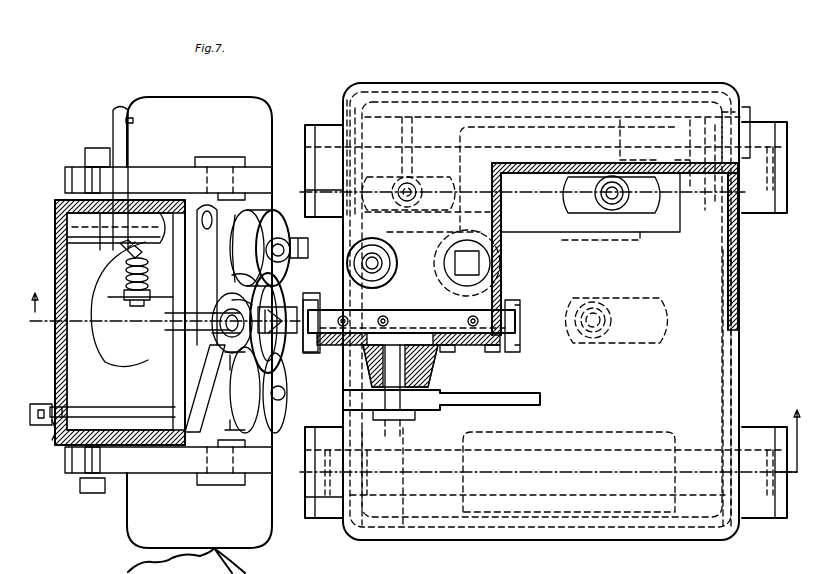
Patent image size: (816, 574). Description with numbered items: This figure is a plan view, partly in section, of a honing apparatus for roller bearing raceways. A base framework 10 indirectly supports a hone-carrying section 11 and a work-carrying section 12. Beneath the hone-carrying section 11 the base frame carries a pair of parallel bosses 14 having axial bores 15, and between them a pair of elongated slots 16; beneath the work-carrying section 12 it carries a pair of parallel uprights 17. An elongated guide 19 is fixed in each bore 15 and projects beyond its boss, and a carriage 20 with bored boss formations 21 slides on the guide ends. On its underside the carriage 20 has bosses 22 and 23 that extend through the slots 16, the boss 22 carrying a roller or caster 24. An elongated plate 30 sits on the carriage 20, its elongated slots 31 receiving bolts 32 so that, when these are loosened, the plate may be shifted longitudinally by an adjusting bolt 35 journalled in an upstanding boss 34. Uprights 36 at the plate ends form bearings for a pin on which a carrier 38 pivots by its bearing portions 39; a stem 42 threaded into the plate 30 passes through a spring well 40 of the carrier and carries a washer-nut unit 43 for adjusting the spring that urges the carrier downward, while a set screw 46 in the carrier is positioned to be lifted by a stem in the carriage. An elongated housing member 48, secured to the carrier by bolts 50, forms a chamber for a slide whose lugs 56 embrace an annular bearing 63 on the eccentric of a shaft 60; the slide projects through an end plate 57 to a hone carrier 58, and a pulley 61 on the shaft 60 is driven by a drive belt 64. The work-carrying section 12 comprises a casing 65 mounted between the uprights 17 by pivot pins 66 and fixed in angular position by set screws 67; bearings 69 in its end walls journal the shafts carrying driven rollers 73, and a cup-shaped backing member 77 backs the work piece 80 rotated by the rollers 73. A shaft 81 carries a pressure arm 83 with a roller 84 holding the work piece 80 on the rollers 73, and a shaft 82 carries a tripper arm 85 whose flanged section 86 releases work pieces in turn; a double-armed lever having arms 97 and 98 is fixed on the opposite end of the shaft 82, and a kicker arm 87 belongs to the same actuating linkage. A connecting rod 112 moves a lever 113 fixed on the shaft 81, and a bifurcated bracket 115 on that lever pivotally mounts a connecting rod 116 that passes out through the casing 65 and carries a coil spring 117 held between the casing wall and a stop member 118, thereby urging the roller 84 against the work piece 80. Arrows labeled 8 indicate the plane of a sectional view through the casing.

The section line 8- 8 is at (414, 377).
The base framework 10 is at (722, 355).
The hone-carrying section 11 is at (536, 330).
The work-carrying section 12 is at (282, 440).
The bosses 14 is at (530, 120).
The axial bores 15 is at (560, 120).
The elongated slots 16 is at (520, 266).
The uprights 17 is at (256, 165).
The elongated guide 19 is at (585, 120).
The carriage 20 is at (494, 541).
The boss formations 21 is at (318, 130).
The boss 22 is at (605, 330).
The boss 23 is at (500, 244).
The roller or caster 24 is at (600, 320).
The elongated plate 30 is at (645, 228).
The elongated slots 31 is at (425, 182).
The bolts 32 is at (412, 185).
The upstanding boss 34 is at (728, 110).
The adjusting bolt 35 is at (705, 118).
The upright 36 is at (412, 125).
The carrier 38 is at (738, 303).
The bearing portions 39 is at (680, 118).
The spring well 40 is at (390, 240).
The stem 42 is at (390, 252).
The washer-nut unit 43 is at (385, 268).
The set screw 46 is at (490, 275).
The housing member 48 is at (476, 352).
The bolts 50 is at (328, 352).
The lugs 56 is at (460, 352).
The end plate 57 is at (308, 293).
The tool or hone carrier 58 is at (285, 307).
The shaft 60 is at (405, 370).
The pulley 61 is at (425, 400).
The annular bearing 63 is at (420, 360).
The drive belt 64 is at (522, 396).
The casing 65 is at (57, 356).
The pivot pins 66 is at (220, 157).
The set screws 67 is at (100, 148).
The bearings 69 is at (268, 212).
The driven roller 73 is at (276, 222).
The cup-shaped backing member 77 is at (215, 350).
The work piece 80 is at (272, 345).
The shaft 81 is at (212, 220).
The shaft 82 is at (118, 407).
The pressure arm 83 is at (190, 297).
The roller 84 is at (190, 336).
The tripper arm 85 is at (200, 380).
The flanged section 86 is at (240, 402).
The kicker arm 87 is at (303, 249).
The arm 97 is at (52, 420).
The arm 98 is at (37, 404).
The connecting rod 112 is at (132, 117).
The lever 113 is at (128, 139).
The bifurcated bracket 115 is at (122, 250).
The connecting rod 116 is at (126, 300).
The coil spring 117 is at (124, 290).
The stop member 118 is at (126, 270).